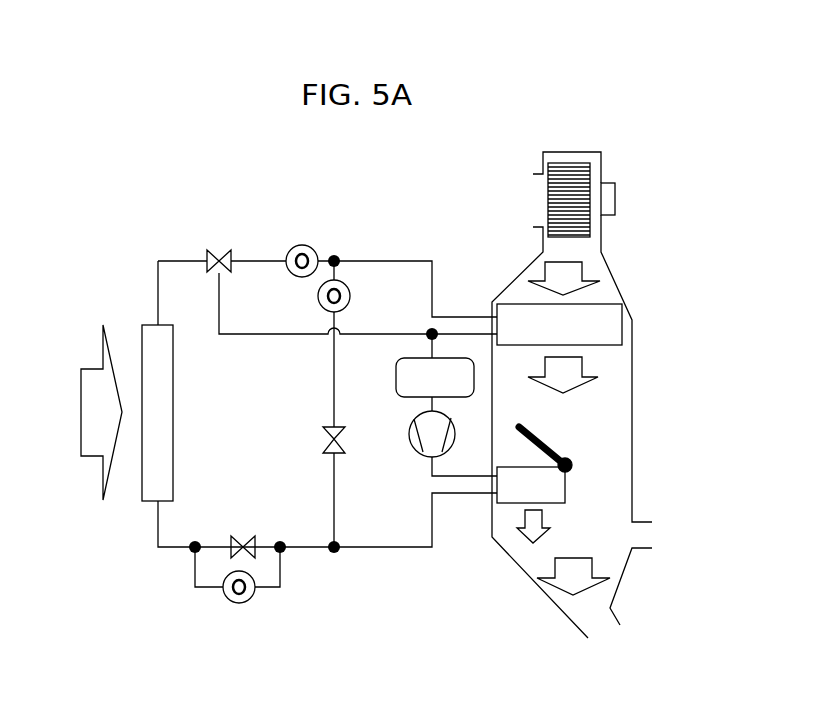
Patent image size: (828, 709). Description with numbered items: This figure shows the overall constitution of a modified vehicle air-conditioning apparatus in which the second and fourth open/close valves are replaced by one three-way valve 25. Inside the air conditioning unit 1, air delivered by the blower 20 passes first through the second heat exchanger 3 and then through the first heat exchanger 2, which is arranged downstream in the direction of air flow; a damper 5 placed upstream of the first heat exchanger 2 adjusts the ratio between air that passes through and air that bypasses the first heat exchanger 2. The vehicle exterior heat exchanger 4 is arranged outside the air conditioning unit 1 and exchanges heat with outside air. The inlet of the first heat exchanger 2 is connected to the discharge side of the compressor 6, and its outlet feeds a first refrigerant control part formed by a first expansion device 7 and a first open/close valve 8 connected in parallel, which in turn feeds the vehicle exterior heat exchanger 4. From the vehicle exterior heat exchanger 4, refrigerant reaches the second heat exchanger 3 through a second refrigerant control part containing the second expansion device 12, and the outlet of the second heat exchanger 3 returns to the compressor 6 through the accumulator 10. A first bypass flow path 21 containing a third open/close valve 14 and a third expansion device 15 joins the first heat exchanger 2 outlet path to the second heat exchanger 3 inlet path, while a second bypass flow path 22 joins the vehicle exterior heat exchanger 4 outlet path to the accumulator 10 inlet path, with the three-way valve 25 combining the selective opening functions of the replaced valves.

The air conditioning unit 1 is at (632, 405).
The first heat exchanger 2 is at (508, 503).
The second heat exchanger 3 is at (622, 327).
The vehicle exterior heat exchanger 4 is at (173, 437).
The damper 5 is at (540, 437).
The compressor 6 is at (452, 425).
The first expansion device 7 is at (252, 600).
The first open/close valve 8 is at (252, 537).
The accumulator 10 is at (398, 378).
The second expansion device 12 is at (312, 248).
The third open/close valve 14 is at (320, 441).
The third expansion device 15 is at (350, 296).
The blower 20 is at (570, 165).
The first bypass flow path 21 is at (340, 503).
The second bypass flow path 22 is at (267, 334).
The three-way valve 25 is at (231, 255).